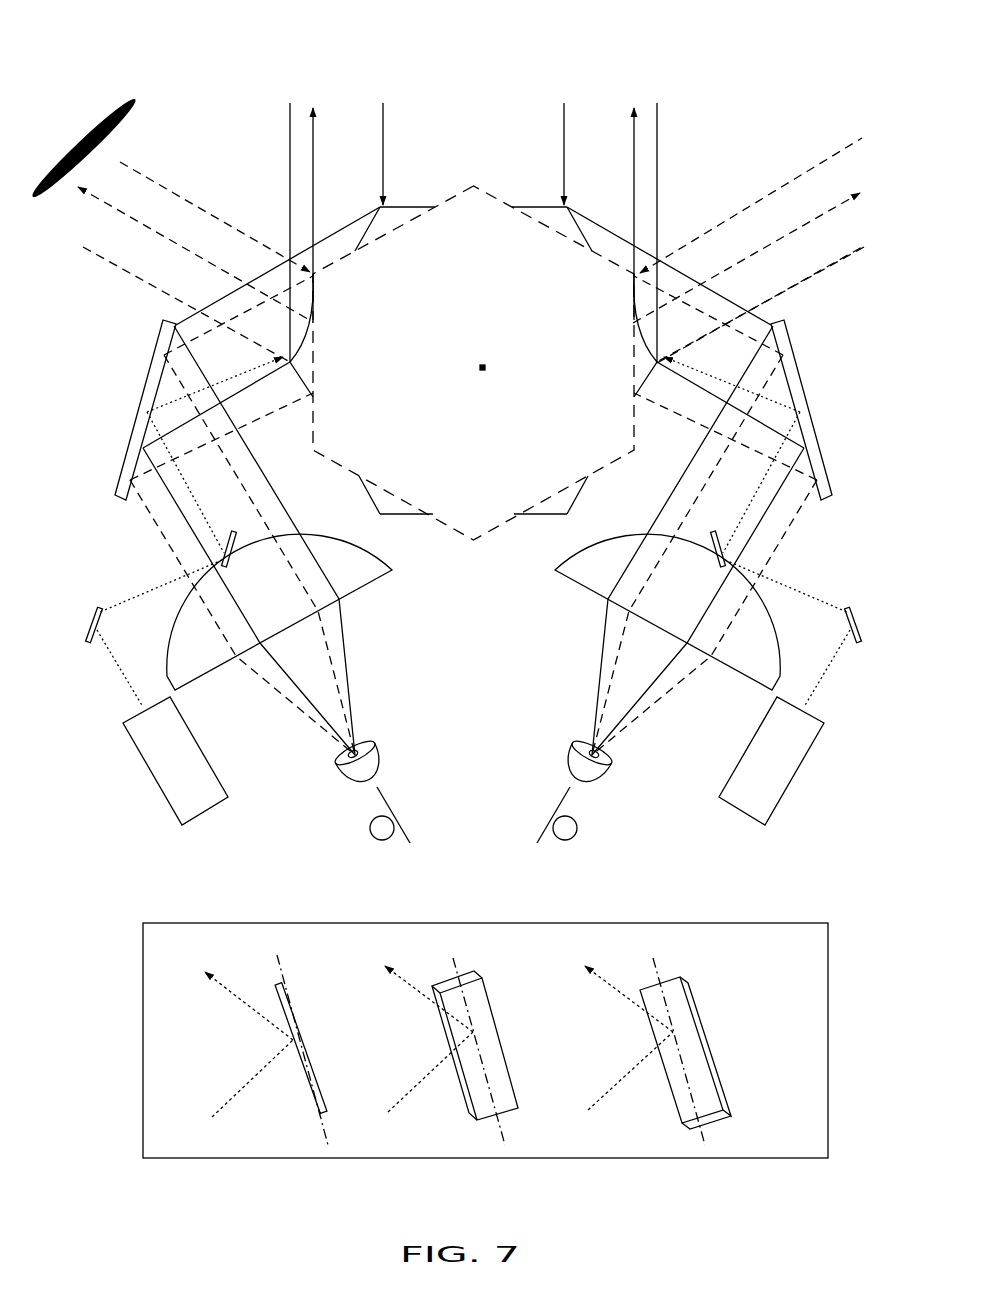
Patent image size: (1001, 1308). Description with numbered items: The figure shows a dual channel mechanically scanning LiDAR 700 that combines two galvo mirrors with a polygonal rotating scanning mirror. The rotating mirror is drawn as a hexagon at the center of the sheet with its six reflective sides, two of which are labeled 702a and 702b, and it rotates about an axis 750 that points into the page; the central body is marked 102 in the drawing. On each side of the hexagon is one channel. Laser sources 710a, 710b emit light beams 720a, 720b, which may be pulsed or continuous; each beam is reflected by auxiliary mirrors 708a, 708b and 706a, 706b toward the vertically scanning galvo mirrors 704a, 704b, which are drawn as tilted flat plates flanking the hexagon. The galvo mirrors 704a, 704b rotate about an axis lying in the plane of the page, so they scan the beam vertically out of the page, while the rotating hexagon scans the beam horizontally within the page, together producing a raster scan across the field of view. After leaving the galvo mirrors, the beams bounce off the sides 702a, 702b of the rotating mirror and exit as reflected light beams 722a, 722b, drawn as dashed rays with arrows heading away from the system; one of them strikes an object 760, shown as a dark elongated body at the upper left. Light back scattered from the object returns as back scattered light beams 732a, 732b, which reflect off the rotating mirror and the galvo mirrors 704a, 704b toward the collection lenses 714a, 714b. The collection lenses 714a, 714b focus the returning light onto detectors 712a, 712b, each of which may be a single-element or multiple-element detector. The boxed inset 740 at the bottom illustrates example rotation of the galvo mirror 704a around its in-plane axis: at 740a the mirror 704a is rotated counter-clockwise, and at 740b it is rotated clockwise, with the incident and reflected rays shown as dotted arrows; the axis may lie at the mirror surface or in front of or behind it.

The dual channel mechanically scanning LiDAR 700 is at (186, 50).
The sample / wafer 102 is at (492, 288).
The object 760 is at (108, 112).
The side of rotationally scanning mirror 702a is at (627, 387).
The side of rotationally scanning mirror 702b is at (320, 387).
The galvo mirror 704a is at (803, 405).
The galvo mirror 704b is at (143, 405).
The auxiliary mirror 706a is at (725, 560).
The auxiliary mirror 706b is at (220, 563).
The auxiliary mirror 708a is at (849, 608).
The auxiliary mirror 708b is at (101, 606).
The laser source 710a is at (792, 780).
The laser source 710b is at (160, 793).
The detector 712a is at (593, 787).
The detector 712b is at (350, 786).
The collection lens 714a is at (583, 592).
The collection lens 714b is at (363, 590).
The light beam 720a is at (820, 672).
The light beam 720b is at (127, 680).
The reflected light beam 722a is at (836, 205).
The reflected light beam 722b is at (210, 257).
The back scattered light beam 732a is at (807, 173).
The back scattered light beam 732b is at (212, 213).
The axis 750 is at (494, 394).
The illustration of mirror rotation 740 is at (302, 1036).
The counter-clockwise rotated mirror position 740a is at (478, 1032).
The clockwise rotated mirror position 740b is at (675, 1032).